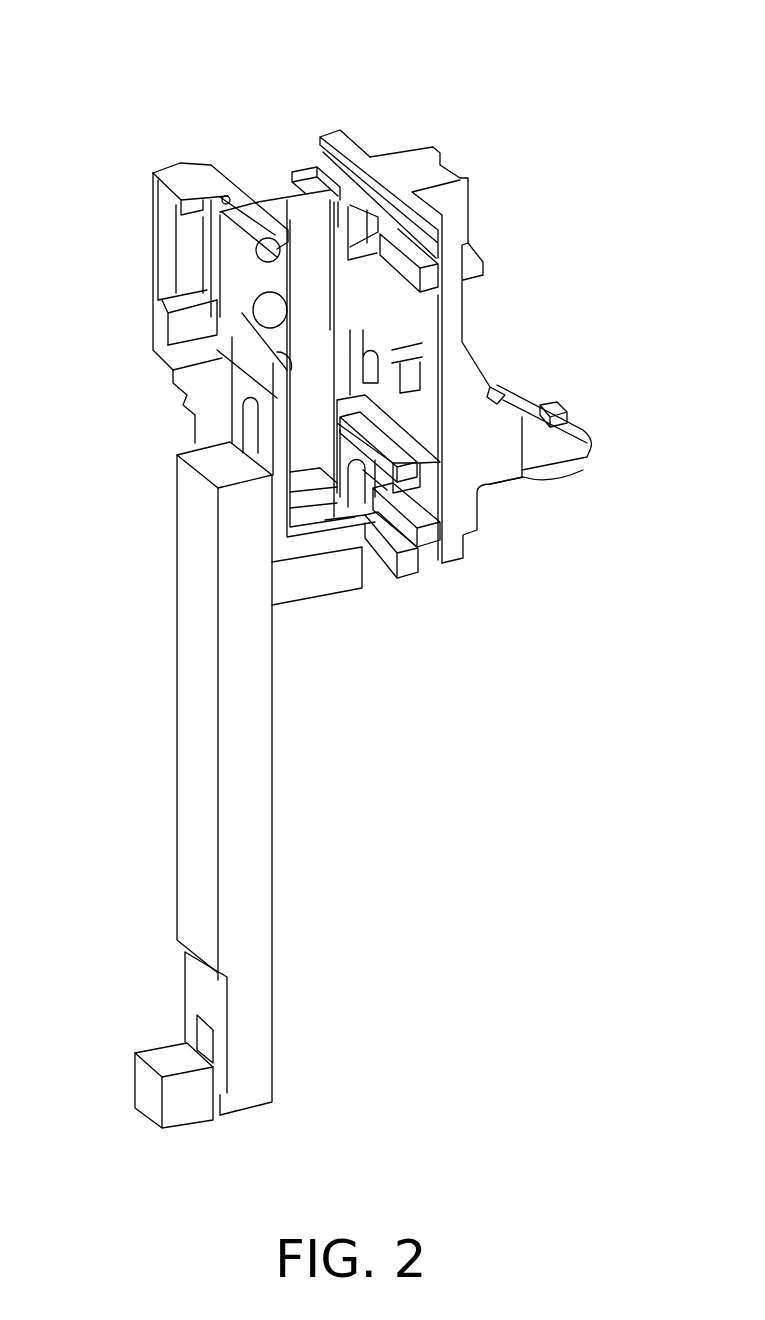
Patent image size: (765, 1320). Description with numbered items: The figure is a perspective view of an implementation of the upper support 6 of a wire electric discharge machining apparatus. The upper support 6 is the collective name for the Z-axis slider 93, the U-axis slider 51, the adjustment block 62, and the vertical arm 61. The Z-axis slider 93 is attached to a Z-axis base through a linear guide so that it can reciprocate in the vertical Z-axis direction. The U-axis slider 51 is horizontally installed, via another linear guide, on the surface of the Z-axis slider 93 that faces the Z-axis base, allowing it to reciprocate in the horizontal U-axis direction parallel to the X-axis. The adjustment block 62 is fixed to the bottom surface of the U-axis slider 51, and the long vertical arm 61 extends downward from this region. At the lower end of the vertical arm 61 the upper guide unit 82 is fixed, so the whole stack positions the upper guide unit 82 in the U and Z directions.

The upper support 6 is at (312, 23).
The U-axis slider 51 is at (287, 172).
The Z-axis slider 93 is at (517, 393).
The adjustment block 62 is at (320, 600).
The vertical arm 61 is at (193, 773).
The upper guide unit 82 is at (162, 1057).